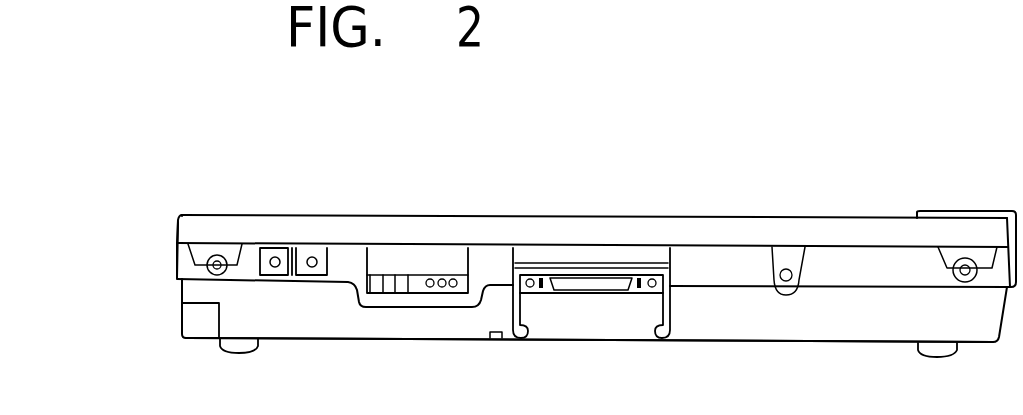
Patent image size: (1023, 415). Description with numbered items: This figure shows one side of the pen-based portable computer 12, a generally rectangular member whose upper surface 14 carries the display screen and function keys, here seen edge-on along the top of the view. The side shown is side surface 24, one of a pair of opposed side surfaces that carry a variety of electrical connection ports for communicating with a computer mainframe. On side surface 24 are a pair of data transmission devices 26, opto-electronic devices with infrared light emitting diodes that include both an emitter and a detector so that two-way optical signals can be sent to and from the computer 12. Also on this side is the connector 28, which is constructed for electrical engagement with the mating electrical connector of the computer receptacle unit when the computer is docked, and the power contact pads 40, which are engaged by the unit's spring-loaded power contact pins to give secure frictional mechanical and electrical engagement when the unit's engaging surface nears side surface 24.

The pen-based computer 12 is at (805, 200).
The upper surface 14 is at (218, 212).
The side surface 24 is at (898, 317).
The data transmission devices 26 is at (272, 245).
The connector 28 is at (596, 282).
The power contact pads 40 is at (406, 293).